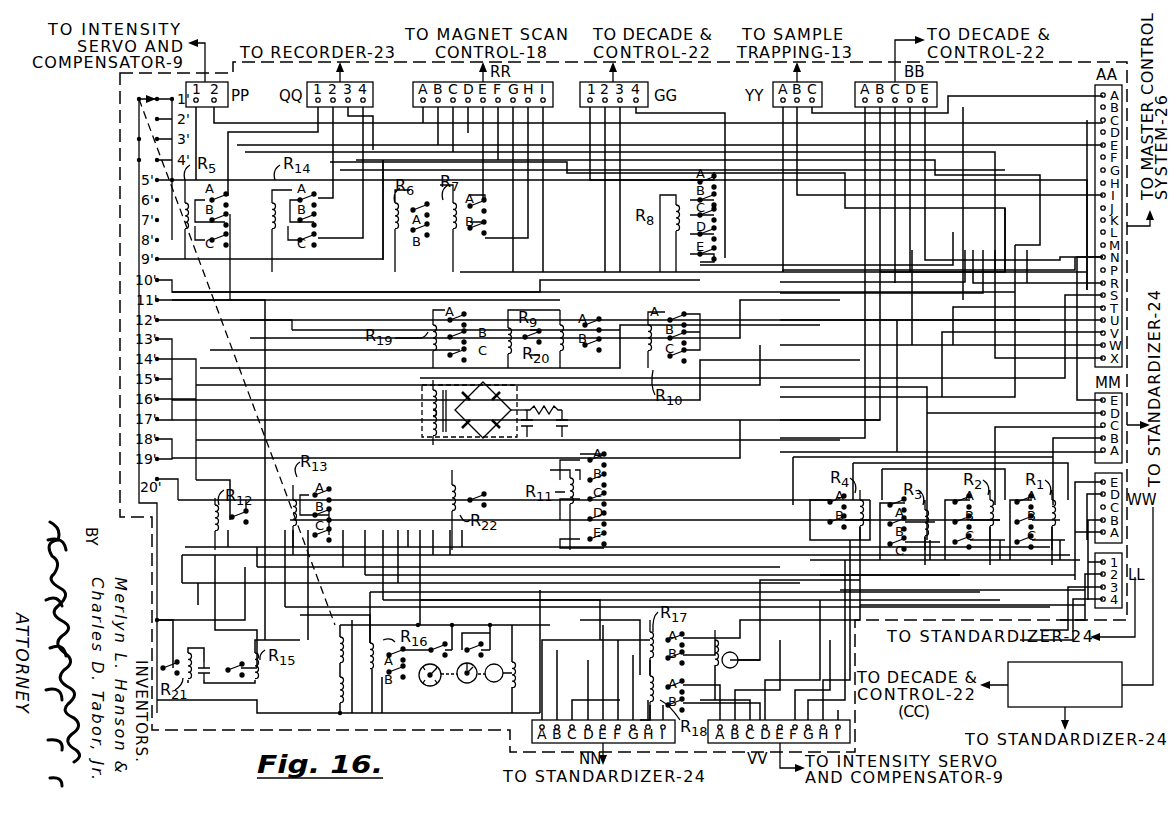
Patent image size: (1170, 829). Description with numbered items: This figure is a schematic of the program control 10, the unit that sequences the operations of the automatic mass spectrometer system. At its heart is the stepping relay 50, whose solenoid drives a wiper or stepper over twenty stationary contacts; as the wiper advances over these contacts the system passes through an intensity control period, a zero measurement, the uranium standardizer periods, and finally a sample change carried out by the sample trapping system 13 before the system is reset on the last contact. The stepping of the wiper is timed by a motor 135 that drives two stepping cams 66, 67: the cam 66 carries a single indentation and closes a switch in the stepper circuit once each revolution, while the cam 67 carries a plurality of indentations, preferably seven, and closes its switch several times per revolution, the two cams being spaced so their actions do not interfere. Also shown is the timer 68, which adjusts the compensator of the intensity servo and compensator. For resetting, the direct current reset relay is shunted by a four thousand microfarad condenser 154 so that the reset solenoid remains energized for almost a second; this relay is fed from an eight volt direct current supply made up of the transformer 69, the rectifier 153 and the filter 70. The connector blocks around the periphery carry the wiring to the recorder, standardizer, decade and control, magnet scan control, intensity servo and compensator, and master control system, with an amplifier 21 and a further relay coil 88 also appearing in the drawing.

The program control 10 is at (120, 152).
The sample trapping system 13 is at (1127, 246).
The amplifier 21 is at (1008, 662).
The stepping relay 50 is at (338, 642).
The stepping cam 66 is at (465, 685).
The stepping cam 67 is at (427, 688).
The timer 68 is at (760, 652).
The transformer 69 is at (443, 442).
The filter 70 is at (546, 437).
The relay coil 88 is at (338, 690).
The motor 135 is at (503, 688).
The rectifier 153 is at (518, 400).
The condenser 154 is at (213, 650).